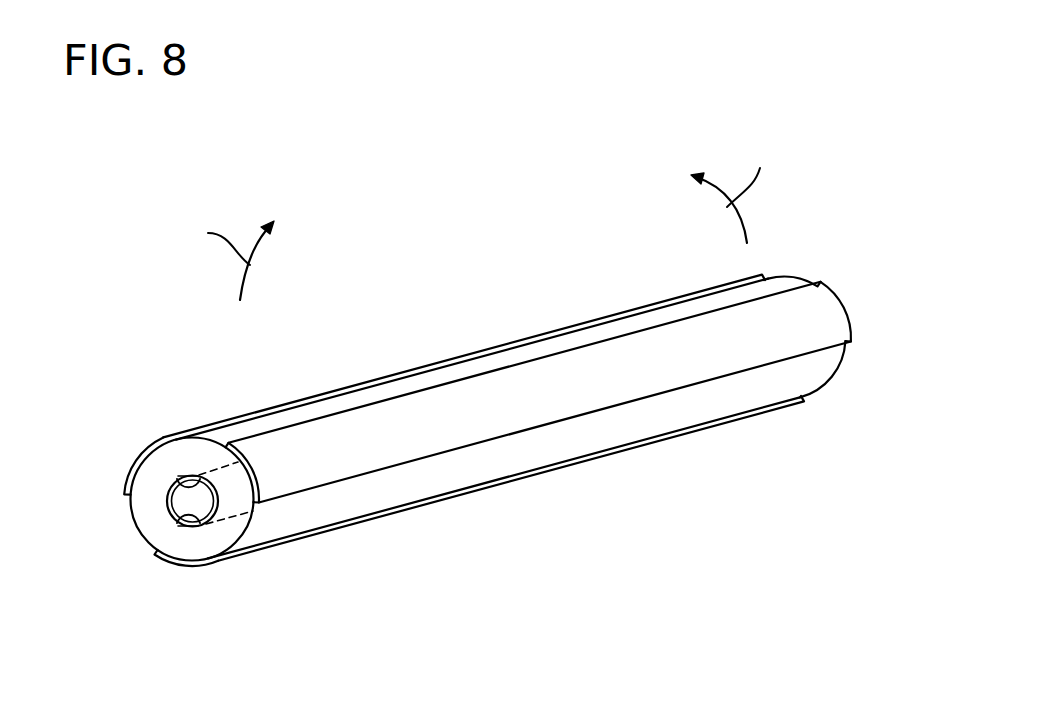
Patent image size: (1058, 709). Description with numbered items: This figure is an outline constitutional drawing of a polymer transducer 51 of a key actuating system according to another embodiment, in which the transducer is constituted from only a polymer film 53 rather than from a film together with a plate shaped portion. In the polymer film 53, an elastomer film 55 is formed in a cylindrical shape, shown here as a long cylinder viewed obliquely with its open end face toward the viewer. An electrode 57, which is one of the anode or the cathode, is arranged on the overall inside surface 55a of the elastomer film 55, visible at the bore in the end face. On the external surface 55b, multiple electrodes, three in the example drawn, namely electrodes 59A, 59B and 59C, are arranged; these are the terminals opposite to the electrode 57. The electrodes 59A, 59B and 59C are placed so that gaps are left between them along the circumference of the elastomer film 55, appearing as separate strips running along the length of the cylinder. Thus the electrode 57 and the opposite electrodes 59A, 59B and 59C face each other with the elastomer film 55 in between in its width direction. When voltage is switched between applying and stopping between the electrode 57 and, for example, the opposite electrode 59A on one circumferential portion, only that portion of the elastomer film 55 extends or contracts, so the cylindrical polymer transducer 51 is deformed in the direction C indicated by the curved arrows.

The polymer transducer 51 is at (665, 532).
The polymer film 53 is at (792, 279).
The elastomer film 55 is at (150, 517).
The inside surface 55a is at (177, 478).
The external surface 55b is at (305, 515).
The electrode 57 is at (200, 522).
The electrode 59A is at (165, 562).
The electrode 59B is at (270, 457).
The electrode 59C is at (135, 458).